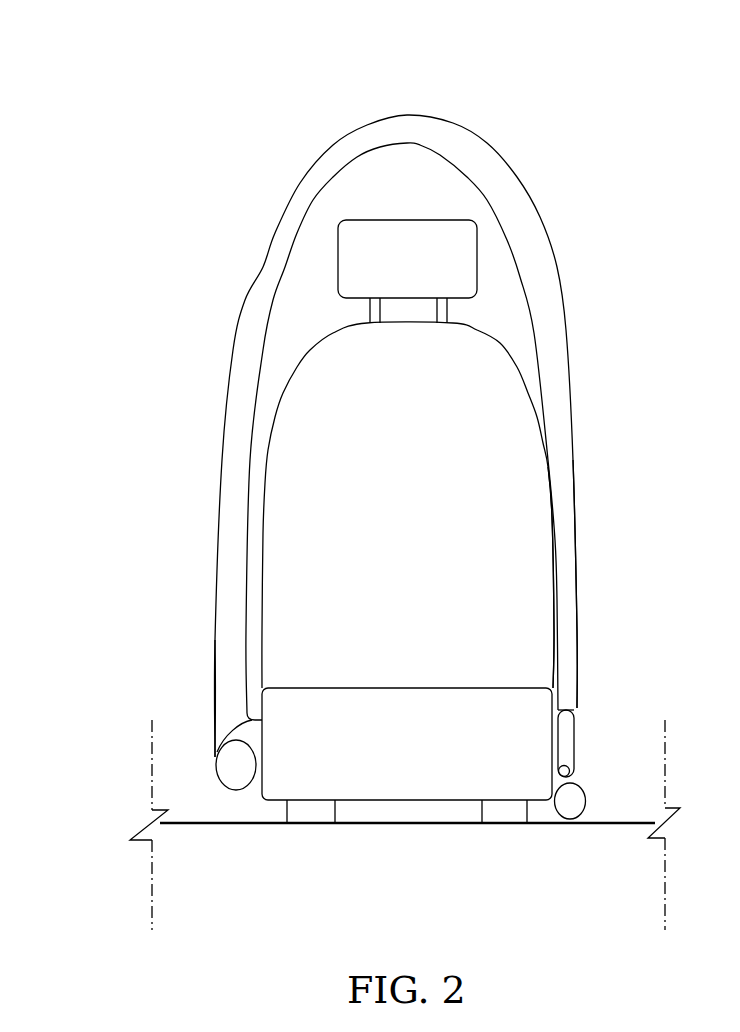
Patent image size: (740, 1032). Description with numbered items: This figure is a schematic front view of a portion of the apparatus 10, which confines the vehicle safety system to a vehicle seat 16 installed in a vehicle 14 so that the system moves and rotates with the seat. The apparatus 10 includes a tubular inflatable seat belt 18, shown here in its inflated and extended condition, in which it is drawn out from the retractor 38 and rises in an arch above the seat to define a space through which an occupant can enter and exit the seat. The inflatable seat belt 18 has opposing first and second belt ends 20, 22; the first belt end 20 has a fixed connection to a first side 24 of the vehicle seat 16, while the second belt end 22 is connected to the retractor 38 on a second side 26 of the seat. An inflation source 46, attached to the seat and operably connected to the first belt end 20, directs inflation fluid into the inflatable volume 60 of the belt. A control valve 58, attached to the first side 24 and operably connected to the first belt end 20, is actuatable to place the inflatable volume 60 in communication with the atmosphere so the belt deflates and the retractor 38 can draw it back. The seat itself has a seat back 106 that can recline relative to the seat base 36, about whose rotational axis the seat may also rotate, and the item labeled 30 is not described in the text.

The apparatus 10 is at (100, 52).
The vehicle 14 is at (608, 828).
The vehicle seat 16 is at (532, 462).
The tubular inflatable seat belt 18 is at (527, 242).
The first belt end 20 is at (568, 668).
The second belt end 22 is at (215, 657).
The first side of the vehicle seat 24 is at (563, 706).
The second side of the vehicle seat 26 is at (245, 722).
The inner wall 30 is at (565, 522).
The seat base 36 is at (543, 767).
The retractor 38 is at (217, 772).
The inflation source 46 is at (587, 805).
The control valve 58 is at (575, 750).
The inflatable volume 60 is at (268, 246).
The seat back 106 is at (527, 557).